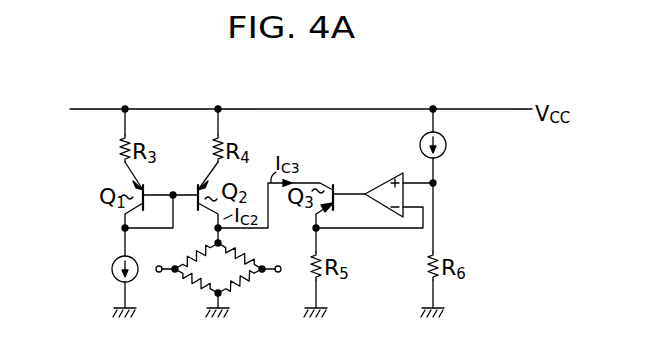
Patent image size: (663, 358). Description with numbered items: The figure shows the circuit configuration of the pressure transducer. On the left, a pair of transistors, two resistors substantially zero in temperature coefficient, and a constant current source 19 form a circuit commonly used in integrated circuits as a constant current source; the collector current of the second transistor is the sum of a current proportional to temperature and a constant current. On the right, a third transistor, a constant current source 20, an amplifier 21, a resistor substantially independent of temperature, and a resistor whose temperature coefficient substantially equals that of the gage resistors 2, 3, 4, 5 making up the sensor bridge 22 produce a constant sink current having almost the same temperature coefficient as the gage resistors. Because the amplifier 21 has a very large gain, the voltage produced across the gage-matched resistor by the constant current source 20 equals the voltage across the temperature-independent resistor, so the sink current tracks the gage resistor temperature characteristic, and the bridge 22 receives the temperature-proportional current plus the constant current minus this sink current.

The bridge resistor (first arm) 2 is at (196, 253).
The bridge resistor (second arm) 3 is at (192, 284).
The bridge resistor (third arm) 4 is at (252, 243).
The bridge resistor (fourth arm) 5 is at (223, 296).
The constant current source 19 is at (112, 269).
The constant current source 20 is at (446, 148).
The amplifier 21 is at (384, 187).
The sensor bridge 22 is at (218, 283).